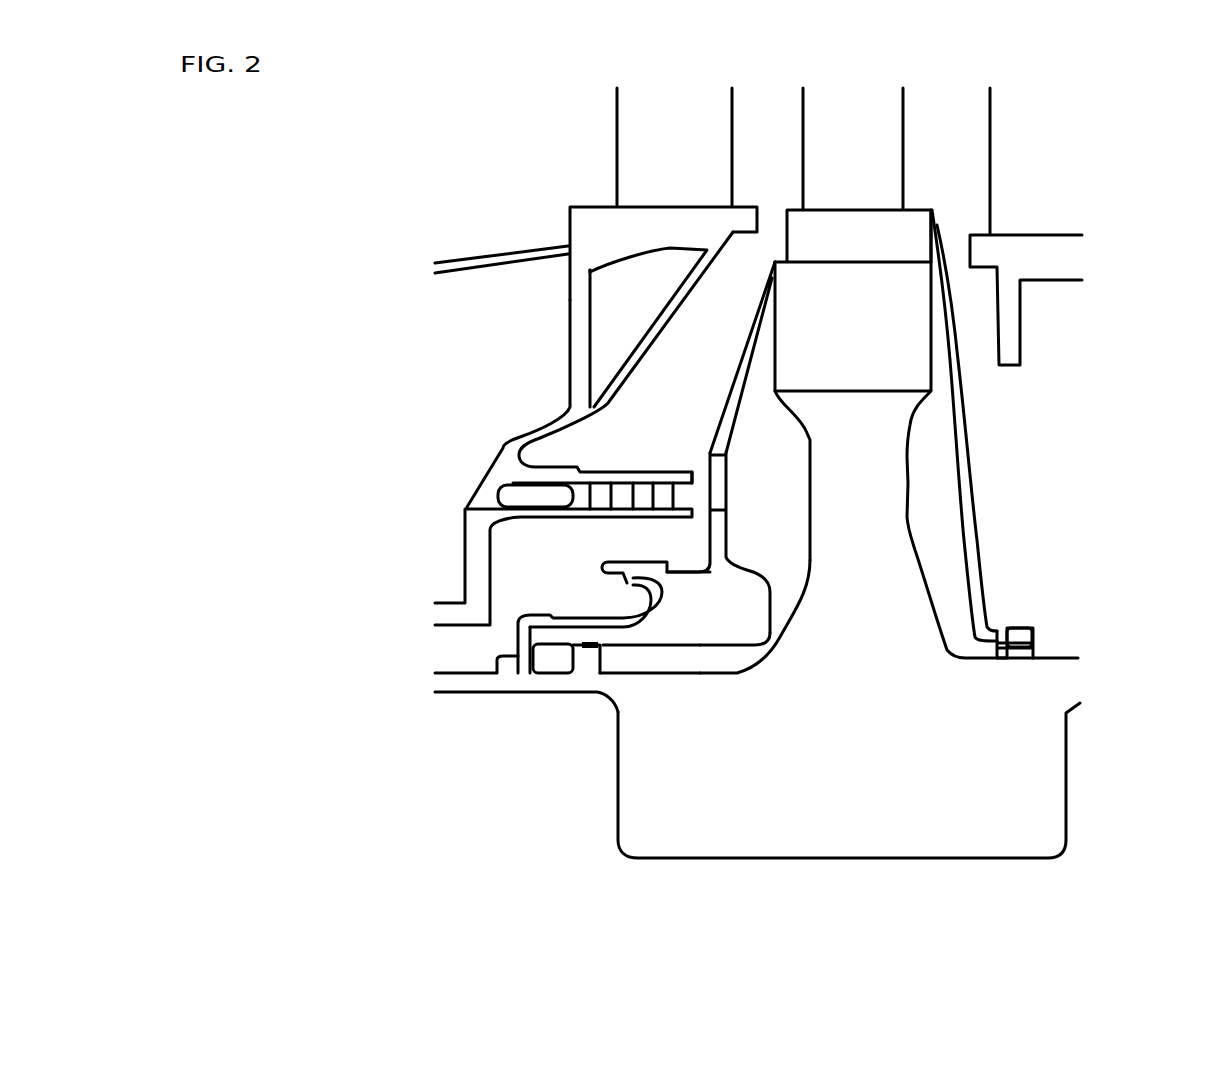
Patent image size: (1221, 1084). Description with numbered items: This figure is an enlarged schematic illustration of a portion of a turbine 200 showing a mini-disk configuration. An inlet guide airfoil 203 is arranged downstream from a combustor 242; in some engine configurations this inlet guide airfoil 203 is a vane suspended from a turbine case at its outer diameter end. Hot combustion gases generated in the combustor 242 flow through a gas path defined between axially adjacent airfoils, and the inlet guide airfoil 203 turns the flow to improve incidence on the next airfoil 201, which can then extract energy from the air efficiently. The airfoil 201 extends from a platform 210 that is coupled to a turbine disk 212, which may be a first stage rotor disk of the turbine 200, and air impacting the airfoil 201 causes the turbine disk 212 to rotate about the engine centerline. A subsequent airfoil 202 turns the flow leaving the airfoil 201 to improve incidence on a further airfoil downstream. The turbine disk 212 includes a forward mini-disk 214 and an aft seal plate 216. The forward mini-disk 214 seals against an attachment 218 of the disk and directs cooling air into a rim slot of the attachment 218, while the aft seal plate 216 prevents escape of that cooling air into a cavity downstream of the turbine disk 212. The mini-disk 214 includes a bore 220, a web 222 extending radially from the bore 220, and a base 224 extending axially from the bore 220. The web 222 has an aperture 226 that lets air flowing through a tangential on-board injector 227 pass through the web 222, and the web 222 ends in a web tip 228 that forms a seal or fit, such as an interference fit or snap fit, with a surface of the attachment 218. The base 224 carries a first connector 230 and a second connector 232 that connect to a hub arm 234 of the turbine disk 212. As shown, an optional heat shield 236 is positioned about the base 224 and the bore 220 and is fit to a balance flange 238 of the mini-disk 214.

The turbine 200 is at (296, 212).
The airfoil 201 is at (872, 150).
The subsequent airfoil 202 is at (1043, 178).
The inlet guide airfoil 203 is at (713, 152).
The platform 210 is at (598, 212).
The turbine disk 212 is at (1042, 758).
The forward mini-disk 214 is at (760, 628).
The aft seal plate 216 is at (957, 518).
The attachment 218 is at (810, 380).
The bore 220 is at (698, 637).
The web 222 is at (748, 398).
The base 224 is at (607, 648).
The aperture 226 is at (729, 495).
The tangential on-board injector 227 is at (618, 493).
The web tip 228 is at (770, 313).
The first connector 230 is at (584, 652).
The second connector 232 is at (513, 662).
The hub arm 234 is at (530, 685).
The heat shield 236 is at (585, 623).
The balance flange 238 is at (625, 577).
The combustor 242 is at (491, 190).